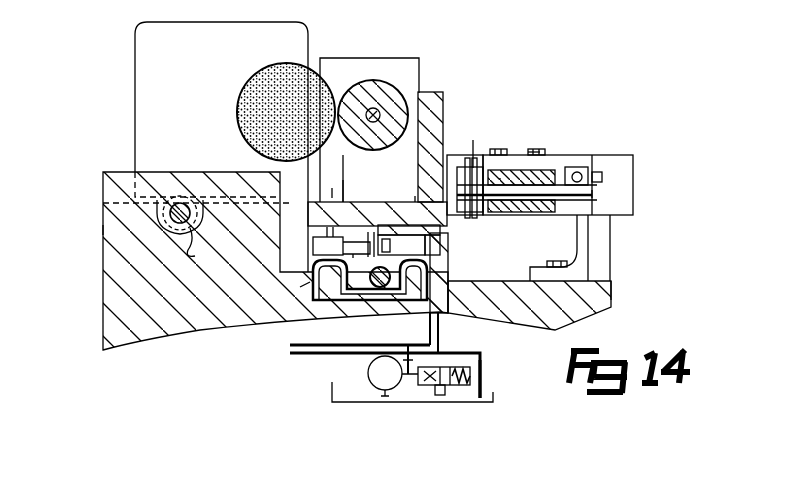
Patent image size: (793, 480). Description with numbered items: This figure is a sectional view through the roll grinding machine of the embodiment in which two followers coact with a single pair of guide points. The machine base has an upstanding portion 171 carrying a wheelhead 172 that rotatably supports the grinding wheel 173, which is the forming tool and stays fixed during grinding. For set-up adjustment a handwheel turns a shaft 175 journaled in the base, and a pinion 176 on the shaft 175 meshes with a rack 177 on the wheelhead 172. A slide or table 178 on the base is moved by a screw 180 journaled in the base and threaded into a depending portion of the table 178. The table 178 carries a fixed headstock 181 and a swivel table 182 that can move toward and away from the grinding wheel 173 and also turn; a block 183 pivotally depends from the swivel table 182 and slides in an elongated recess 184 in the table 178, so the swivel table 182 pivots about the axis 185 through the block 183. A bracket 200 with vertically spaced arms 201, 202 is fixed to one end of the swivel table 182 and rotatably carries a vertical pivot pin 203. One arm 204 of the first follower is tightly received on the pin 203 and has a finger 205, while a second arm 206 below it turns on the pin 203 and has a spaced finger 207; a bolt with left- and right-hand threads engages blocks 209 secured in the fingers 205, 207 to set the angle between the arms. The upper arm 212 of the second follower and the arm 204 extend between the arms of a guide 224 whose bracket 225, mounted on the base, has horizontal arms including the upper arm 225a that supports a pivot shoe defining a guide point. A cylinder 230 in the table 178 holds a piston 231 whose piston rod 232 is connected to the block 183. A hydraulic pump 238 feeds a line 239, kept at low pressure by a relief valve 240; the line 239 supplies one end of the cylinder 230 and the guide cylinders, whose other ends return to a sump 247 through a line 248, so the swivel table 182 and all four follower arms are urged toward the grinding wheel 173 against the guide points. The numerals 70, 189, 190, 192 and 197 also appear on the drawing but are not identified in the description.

The base 70 is at (538, 312).
The upstanding portion 171 is at (103, 229).
The wheelhead 172 is at (135, 45).
The grinding wheel 173 is at (250, 77).
The shaft 175 is at (184, 247).
The pinion 176 is at (198, 221).
The rack 177 is at (160, 220).
The table 178 is at (300, 287).
The screw 180 is at (318, 297).
The headstock 181 is at (420, 76).
The swivel table 182 is at (415, 199).
The block 183 is at (313, 246).
The elongated recess 184 is at (372, 238).
The axis 185 is at (332, 194).
The pin 189 is at (463, 148).
The wall 190 is at (445, 108).
The hub 192 is at (371, 173).
The drive wheel 197 is at (372, 80).
The bracket 200 is at (453, 236).
The arm 201 is at (483, 230).
The arm 202 is at (521, 138).
The vertical pivot pin 203 is at (500, 179).
The arm 204 is at (522, 215).
The finger 205 is at (602, 196).
The second arm 206 is at (533, 214).
The finger 207 is at (588, 226).
The blocks 209 is at (602, 173).
The upper arm 212 is at (578, 167).
The guide 224 is at (613, 274).
The bracket 225 is at (610, 257).
The horizontal arm 225a is at (532, 152).
The cylinder 230 is at (395, 302).
The piston 231 is at (409, 240).
The piston rod 232 is at (375, 219).
The hydraulic pump 238 is at (399, 383).
The line 239 is at (340, 345).
The relief valve 240 is at (458, 367).
The sump 247 is at (493, 402).
The line 248 is at (483, 375).